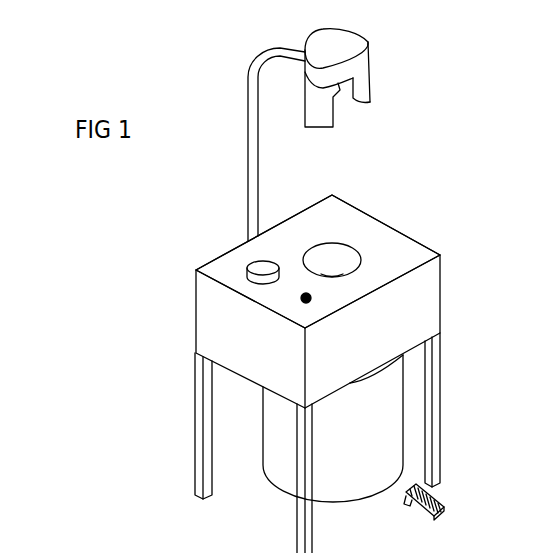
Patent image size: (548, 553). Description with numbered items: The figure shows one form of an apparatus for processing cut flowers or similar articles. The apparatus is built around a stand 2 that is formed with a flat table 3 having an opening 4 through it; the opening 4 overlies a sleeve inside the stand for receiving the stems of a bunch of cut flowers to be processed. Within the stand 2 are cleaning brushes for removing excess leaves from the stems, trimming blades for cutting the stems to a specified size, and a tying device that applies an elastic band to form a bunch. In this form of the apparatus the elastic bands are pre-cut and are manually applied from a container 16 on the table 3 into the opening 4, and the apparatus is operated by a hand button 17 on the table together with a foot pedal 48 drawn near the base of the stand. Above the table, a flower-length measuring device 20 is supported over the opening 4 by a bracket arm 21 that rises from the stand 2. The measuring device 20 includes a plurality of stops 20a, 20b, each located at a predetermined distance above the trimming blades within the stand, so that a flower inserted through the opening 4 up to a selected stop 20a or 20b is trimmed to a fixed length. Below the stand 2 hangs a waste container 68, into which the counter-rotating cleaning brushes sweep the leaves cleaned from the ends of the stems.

The stand 2 is at (193, 300).
The flat table 3 is at (352, 223).
The opening 4 is at (350, 253).
The container 16 is at (253, 263).
The hand button 17 is at (298, 298).
The flower-length measuring device 20 is at (372, 61).
The stop 20a is at (322, 121).
The stop 20b is at (362, 95).
The bracket arm 21 is at (248, 102).
The foot pedal 48 is at (438, 504).
The waste container 68 is at (352, 490).